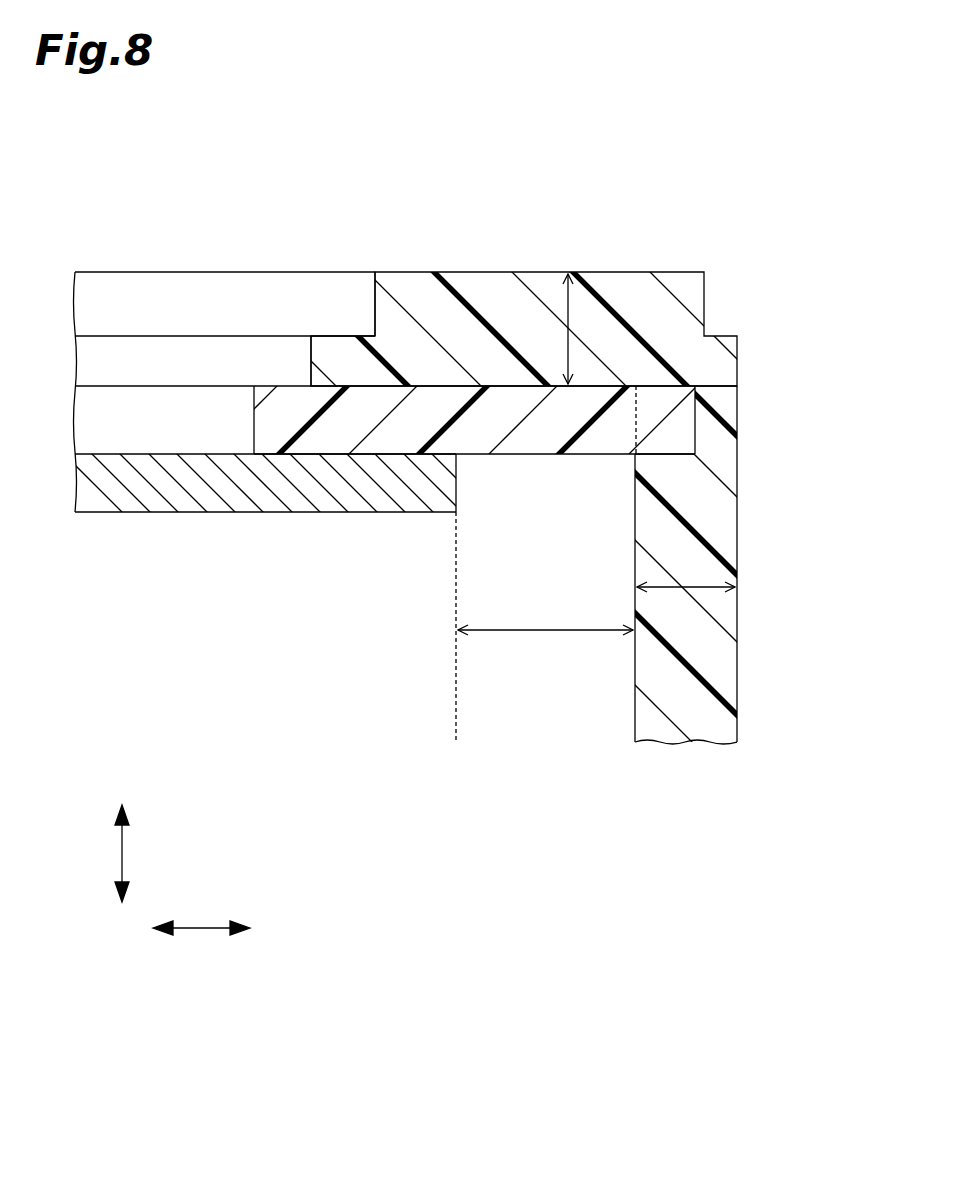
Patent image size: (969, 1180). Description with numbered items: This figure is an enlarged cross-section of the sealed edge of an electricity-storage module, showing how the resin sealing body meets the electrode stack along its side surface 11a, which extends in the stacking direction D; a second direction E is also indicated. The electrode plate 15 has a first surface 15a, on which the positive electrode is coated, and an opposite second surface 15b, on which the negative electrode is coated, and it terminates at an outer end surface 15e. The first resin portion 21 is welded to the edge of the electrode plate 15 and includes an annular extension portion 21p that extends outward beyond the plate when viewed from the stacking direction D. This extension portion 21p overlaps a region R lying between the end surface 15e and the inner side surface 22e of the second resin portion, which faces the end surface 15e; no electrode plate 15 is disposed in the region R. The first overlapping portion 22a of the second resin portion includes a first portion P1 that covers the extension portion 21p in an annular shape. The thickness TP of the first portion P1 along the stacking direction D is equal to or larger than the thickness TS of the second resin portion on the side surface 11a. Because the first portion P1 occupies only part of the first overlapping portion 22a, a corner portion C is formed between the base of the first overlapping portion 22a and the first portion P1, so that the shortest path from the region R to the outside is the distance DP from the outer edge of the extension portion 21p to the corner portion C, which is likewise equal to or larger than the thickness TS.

The side surface 11a is at (452, 705).
The electrode plate 15 is at (307, 492).
The first surface 15a is at (153, 445).
The second surface 15b is at (227, 512).
The outer end surface 15e is at (456, 512).
The first resin portion 21 is at (680, 422).
The extension portion 21p is at (546, 432).
The first overlapping portion 22a is at (690, 300).
The inner side surface 22e is at (648, 527).
The corner portion C is at (368, 327).
The distance DP is at (455, 384).
The first portion P1 is at (502, 300).
The thickness of the first portion TP is at (572, 327).
The thickness of the second resin portion TS is at (695, 589).
The region R is at (546, 632).
The stacking direction D is at (120, 850).
The direction E is at (200, 931).